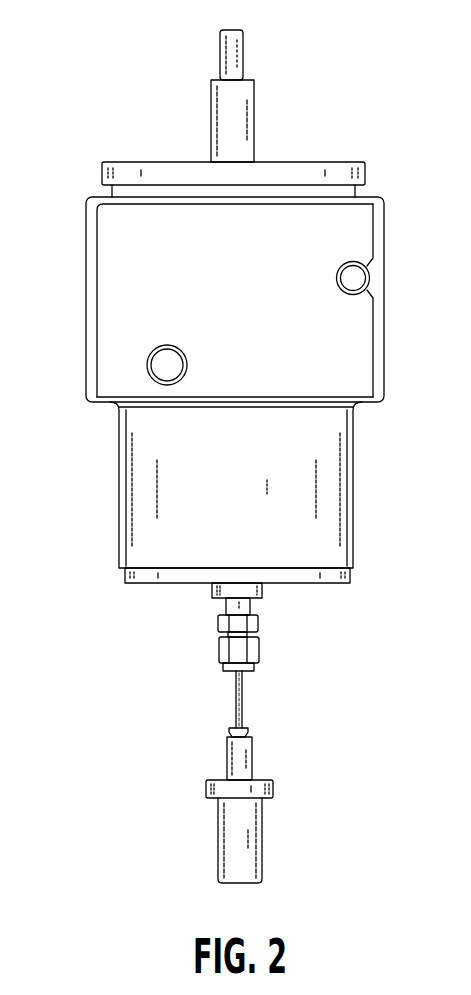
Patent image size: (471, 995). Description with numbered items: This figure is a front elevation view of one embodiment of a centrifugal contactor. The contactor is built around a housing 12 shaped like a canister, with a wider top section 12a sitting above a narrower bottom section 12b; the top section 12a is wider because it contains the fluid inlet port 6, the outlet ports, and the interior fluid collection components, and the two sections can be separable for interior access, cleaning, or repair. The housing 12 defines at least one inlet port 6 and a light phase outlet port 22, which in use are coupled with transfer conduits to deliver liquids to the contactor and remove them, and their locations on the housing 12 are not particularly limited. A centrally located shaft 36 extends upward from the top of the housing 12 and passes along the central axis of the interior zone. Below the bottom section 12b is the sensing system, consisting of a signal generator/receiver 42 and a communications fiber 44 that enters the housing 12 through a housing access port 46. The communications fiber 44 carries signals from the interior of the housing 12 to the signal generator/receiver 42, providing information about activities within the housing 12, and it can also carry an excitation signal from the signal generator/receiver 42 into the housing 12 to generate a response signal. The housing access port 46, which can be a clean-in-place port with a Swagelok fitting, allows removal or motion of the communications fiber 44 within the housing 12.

The inlet port 6 is at (147, 365).
The housing 12 is at (242, 380).
The top section 12a is at (386, 208).
The bottom section 12b is at (355, 490).
The light phase outlet port 22 is at (362, 278).
The shaft 36 is at (225, 122).
The signal generator/receiver 42 is at (220, 835).
The communications fiber 44 is at (237, 705).
The housing access port 46 is at (240, 655).